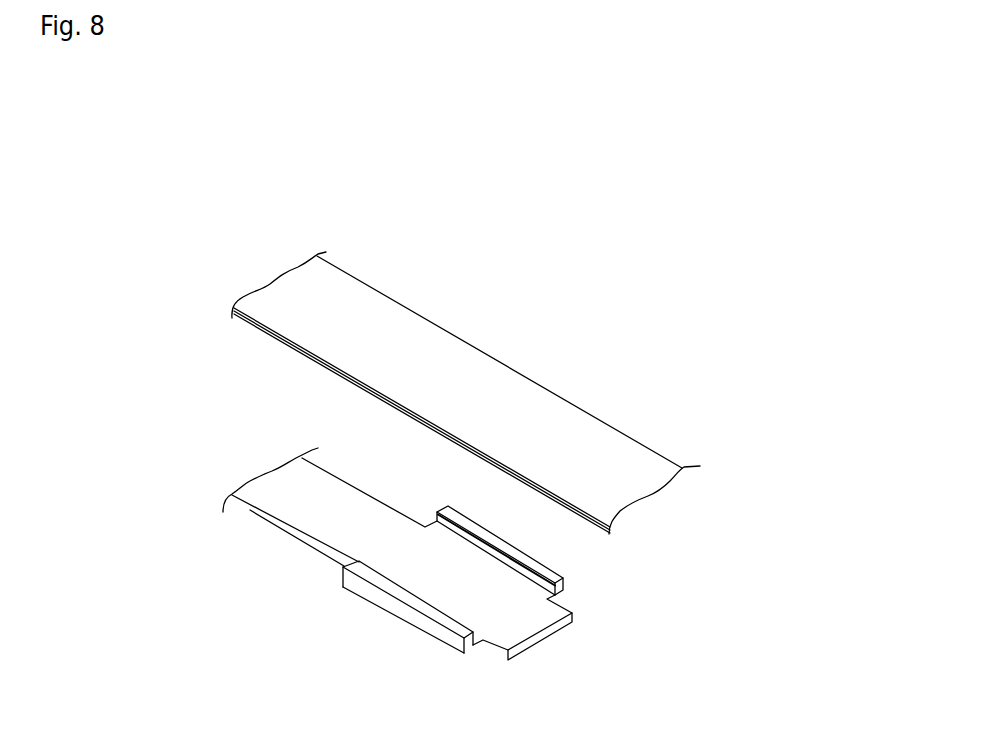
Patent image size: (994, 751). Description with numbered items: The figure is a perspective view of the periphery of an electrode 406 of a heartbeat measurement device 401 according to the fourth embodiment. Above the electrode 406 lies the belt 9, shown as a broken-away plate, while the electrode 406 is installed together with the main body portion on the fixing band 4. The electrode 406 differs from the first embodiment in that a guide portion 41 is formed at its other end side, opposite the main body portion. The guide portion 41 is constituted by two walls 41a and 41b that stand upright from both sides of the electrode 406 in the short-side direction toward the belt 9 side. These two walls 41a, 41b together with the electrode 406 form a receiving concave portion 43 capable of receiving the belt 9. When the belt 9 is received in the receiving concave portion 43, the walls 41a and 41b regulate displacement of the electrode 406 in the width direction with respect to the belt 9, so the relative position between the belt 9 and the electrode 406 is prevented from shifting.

The heartbeat measurement device 401 is at (550, 258).
The fixing band 4 is at (557, 380).
The belt 9 is at (602, 436).
The electrode 406 is at (281, 524).
The guide portion 41 is at (385, 610).
The wall 41a is at (435, 632).
The wall 41b is at (563, 584).
The receiving concave portion 43 is at (403, 573).